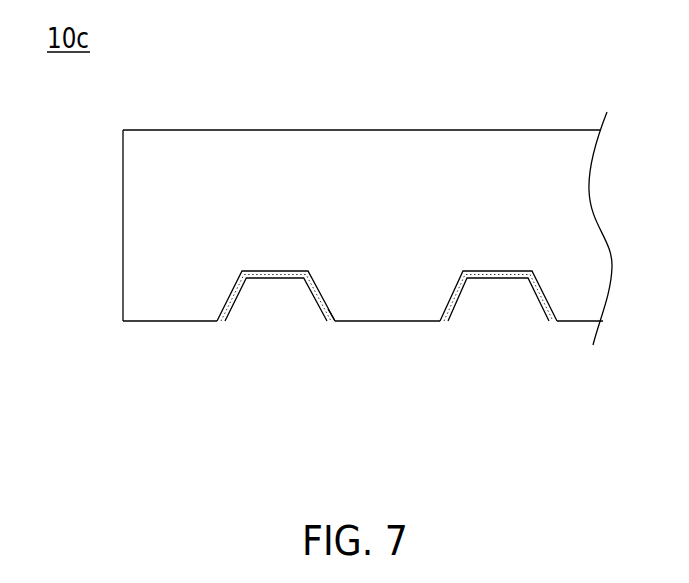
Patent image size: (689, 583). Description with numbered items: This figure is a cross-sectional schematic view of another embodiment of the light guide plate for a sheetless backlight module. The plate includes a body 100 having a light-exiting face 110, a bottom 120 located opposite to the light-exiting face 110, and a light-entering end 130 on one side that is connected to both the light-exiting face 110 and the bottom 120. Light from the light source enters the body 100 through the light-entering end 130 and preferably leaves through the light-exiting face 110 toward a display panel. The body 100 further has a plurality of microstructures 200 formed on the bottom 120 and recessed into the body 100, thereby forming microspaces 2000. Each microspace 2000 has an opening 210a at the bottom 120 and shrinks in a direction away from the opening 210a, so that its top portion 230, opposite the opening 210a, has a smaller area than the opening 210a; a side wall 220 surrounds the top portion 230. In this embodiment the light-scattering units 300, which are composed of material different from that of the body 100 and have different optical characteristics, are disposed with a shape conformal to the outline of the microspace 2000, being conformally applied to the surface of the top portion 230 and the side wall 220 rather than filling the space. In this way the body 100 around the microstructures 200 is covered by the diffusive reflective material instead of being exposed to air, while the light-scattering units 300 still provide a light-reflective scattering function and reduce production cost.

The body 100 is at (327, 225).
The light-exiting face 110 is at (362, 130).
The bottom 120 is at (387, 322).
The light-entering end 130 is at (123, 220).
The microstructures 200 is at (282, 348).
The side wall 220 is at (233, 307).
The top portion 230 is at (286, 273).
The microspaces 2000 is at (263, 303).
The opening 210a is at (323, 322).
The light-scattering units 300 is at (540, 293).